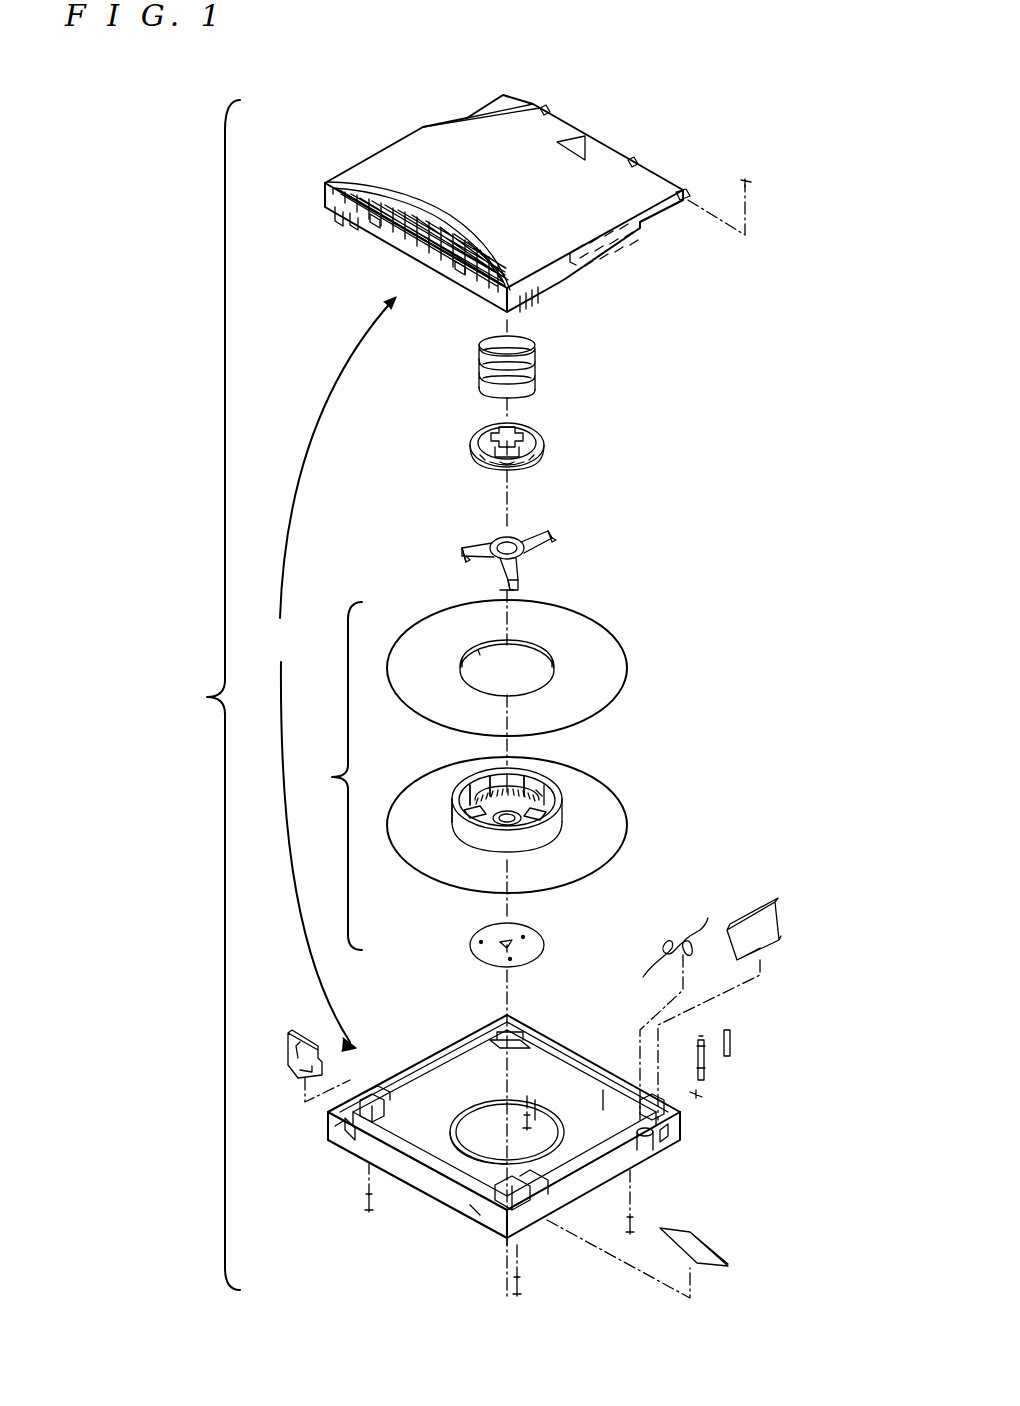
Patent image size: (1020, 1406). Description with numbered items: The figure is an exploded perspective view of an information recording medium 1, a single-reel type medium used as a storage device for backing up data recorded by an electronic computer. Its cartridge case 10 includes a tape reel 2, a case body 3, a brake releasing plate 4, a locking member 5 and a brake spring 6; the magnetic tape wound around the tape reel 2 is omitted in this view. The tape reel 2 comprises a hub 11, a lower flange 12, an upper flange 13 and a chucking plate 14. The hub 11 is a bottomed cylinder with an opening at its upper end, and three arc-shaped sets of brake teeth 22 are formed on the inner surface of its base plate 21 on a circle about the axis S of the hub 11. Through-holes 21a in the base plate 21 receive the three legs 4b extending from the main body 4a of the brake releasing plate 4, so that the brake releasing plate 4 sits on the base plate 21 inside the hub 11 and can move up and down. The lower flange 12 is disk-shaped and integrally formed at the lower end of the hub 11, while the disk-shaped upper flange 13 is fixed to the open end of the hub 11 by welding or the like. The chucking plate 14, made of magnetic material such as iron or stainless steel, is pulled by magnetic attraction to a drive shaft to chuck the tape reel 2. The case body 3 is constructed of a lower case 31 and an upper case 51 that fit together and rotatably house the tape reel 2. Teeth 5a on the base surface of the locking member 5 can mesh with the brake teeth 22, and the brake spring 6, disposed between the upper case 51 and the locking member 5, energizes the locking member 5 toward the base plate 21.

The information recording medium 1 is at (489, 64).
The cartridge case 10 is at (202, 695).
The case body 3 is at (332, 674).
The upper case 51 is at (353, 170).
The brake spring 6 is at (533, 366).
The locking member 5 is at (545, 443).
The teeth 5a is at (512, 470).
The brake releasing plate 4 is at (473, 543).
The main body 4a is at (550, 542).
The legs 4b is at (460, 556).
The axis S is at (497, 583).
The upper flange 13 is at (615, 660).
The tape reel 2 is at (335, 776).
The base plate 21 is at (452, 795).
The through-holes 21a is at (540, 790).
The brake teeth 22 is at (497, 778).
The hub 11 is at (552, 826).
The lower flange 12 is at (420, 876).
The chucking plate 14 is at (535, 938).
The lower case 31 is at (468, 1038).